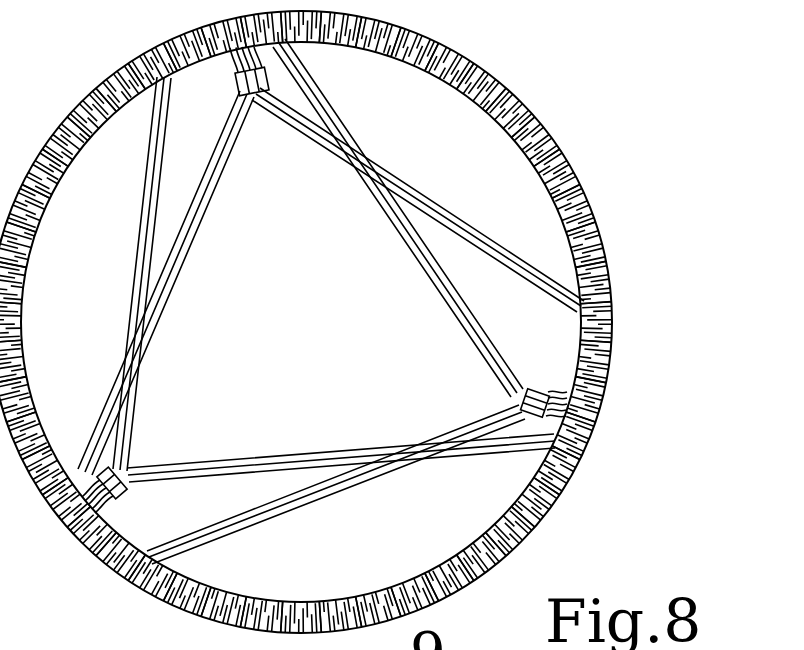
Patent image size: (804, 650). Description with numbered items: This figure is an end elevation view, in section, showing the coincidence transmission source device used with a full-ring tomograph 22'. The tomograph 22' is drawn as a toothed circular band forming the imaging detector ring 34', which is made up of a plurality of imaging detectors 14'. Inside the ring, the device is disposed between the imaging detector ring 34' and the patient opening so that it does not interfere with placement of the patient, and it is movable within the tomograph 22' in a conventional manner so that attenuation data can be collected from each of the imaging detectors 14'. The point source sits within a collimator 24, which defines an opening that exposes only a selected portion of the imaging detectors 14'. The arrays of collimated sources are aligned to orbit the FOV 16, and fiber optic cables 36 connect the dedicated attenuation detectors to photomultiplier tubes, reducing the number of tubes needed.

The full-ring tomograph 22' is at (364, 324).
The imaging detector ring 34' is at (364, 324).
The imaging detectors 14' is at (490, 200).
The collimator 24 is at (100, 467).
The FOV 16 is at (190, 466).
The fiber optic cable 36 is at (106, 507).